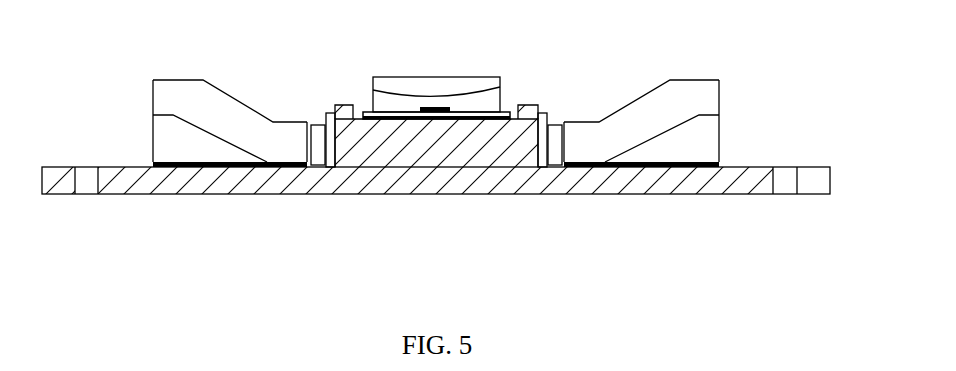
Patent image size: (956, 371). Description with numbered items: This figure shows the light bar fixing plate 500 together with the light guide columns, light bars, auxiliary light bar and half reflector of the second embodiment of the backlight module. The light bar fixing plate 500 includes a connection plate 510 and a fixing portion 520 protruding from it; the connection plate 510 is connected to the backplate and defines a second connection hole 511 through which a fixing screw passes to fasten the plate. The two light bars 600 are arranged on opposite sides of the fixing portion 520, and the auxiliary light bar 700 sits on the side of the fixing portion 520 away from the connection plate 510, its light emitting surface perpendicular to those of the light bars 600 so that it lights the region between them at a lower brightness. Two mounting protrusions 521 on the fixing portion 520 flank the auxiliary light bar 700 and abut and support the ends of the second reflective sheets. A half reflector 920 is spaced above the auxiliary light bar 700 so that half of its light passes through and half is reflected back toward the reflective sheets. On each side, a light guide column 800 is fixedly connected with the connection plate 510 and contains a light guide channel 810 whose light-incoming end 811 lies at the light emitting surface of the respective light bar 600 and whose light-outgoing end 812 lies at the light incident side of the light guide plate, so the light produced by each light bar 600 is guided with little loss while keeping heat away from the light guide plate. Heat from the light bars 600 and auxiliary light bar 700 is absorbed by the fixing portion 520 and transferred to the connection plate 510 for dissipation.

The light bar fixing plate 500 is at (446, 167).
The connection plate 510 is at (436, 218).
The second connection hole 511 is at (88, 183).
The fixing portion 520 is at (441, 149).
The mounting protrusion 521 is at (343, 110).
The light bar 600 is at (315, 125).
The auxiliary light bar 700 is at (447, 108).
The half reflector 920 is at (395, 88).
The light guide column 800 is at (172, 138).
The light guide channel 810 is at (434, 89).
The light-incoming end 811 is at (307, 133).
The light-outgoing end 812 is at (153, 100).